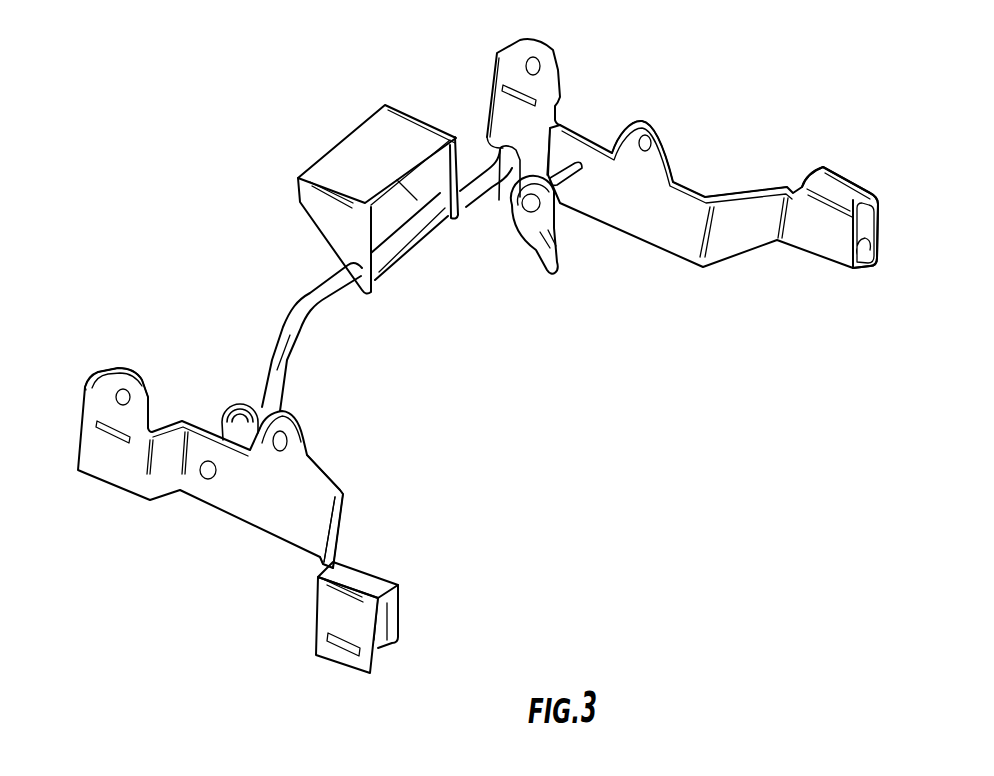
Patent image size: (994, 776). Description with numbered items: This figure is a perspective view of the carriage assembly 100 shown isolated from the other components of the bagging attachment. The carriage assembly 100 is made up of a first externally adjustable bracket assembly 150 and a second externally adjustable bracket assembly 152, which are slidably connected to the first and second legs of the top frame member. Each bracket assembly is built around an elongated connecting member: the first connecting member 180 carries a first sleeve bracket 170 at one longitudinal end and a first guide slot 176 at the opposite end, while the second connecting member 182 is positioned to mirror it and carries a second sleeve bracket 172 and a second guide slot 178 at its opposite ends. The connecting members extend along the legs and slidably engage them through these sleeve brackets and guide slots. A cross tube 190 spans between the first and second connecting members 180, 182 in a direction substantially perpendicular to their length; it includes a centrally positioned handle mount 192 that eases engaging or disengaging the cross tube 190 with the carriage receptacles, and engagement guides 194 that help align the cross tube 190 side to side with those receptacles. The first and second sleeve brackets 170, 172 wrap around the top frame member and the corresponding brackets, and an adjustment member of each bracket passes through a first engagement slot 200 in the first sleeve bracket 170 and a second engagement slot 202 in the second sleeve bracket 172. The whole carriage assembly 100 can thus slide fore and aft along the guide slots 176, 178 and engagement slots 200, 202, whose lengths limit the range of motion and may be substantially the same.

The carriage assembly 100 is at (435, 332).
The first externally adjustable bracket assembly 150 is at (422, 577).
The second externally adjustable bracket assembly 152 is at (693, 295).
The first sleeve bracket 170 is at (357, 590).
The second sleeve bracket 172 is at (837, 210).
The first guide slot 176 is at (100, 413).
The second guide slot 178 is at (503, 88).
The first connecting member 180 is at (309, 478).
The second connecting member 182 is at (672, 197).
The cross tube 190 is at (302, 317).
The handle mount 192 is at (337, 147).
The engagement guide 194 is at (237, 403).
The first engagement slot 200 is at (335, 658).
The second engagement slot 202 is at (869, 270).